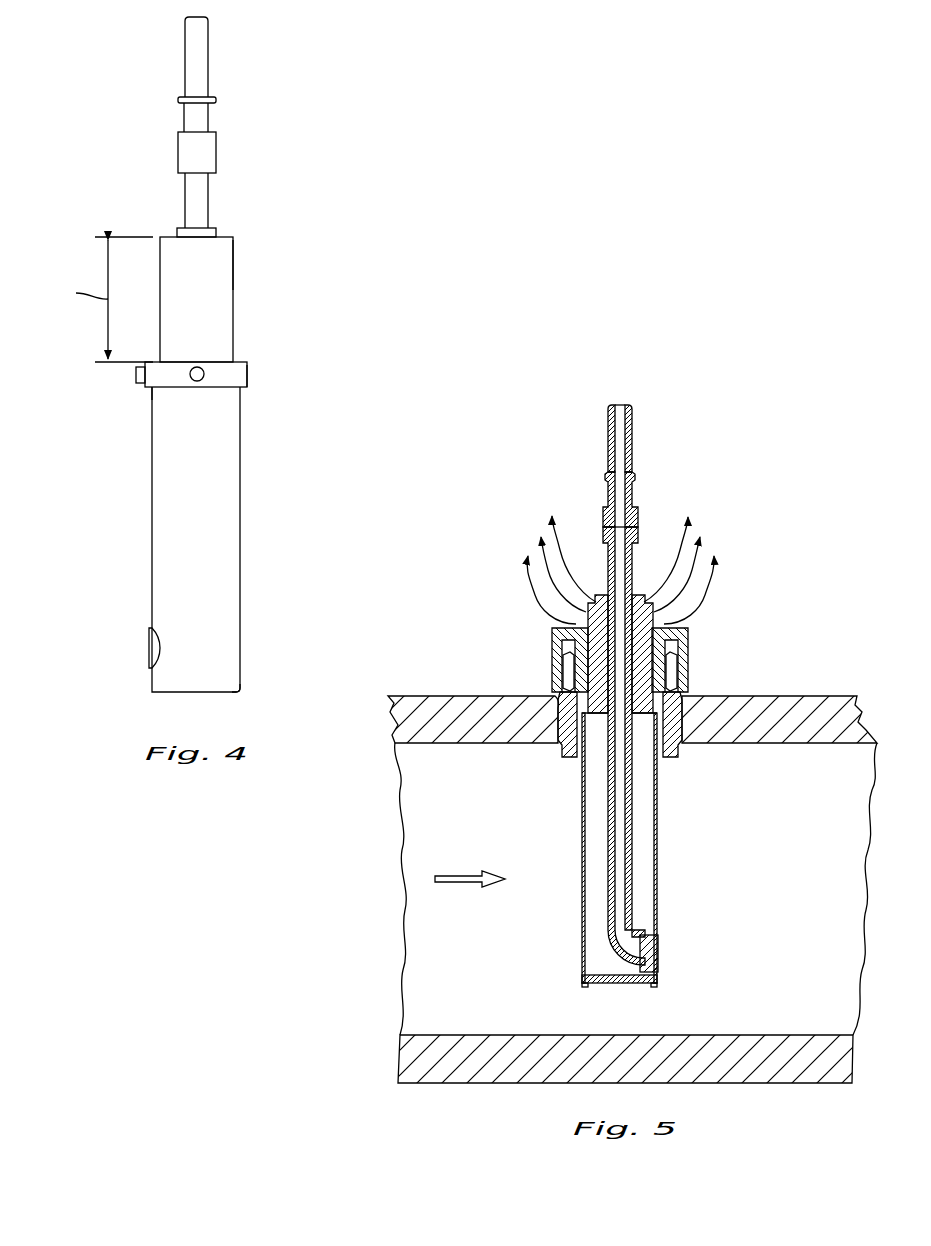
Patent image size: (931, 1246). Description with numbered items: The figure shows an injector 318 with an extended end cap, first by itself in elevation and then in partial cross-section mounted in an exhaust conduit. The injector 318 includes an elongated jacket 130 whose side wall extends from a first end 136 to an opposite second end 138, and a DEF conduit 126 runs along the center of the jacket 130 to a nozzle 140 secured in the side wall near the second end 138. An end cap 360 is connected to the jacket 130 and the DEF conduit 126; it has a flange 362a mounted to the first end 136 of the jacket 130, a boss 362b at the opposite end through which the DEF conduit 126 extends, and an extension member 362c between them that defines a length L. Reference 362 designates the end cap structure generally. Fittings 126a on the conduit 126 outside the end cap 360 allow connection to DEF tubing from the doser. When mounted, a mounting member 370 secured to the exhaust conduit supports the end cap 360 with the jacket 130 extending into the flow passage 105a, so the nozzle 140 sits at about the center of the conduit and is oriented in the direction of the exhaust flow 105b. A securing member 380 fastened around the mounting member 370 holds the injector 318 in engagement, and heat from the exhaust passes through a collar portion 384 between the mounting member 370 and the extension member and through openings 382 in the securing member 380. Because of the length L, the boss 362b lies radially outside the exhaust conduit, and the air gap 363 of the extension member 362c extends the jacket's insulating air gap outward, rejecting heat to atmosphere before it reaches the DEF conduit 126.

In FIG. 5, the flow passage 105a is at (777, 919).
In FIG. 5, the exhaust flow 105b is at (457, 870).
In FIG. 4, the DEF conduit 126 is at (201, 192).
In FIG. 5, the DEF conduit 126 is at (634, 553).
In FIG. 5, the fitting 126a is at (633, 442).
In FIG. 4, the jacket 130 is at (243, 517).
In FIG. 5, the jacket 130 is at (578, 975).
In FIG. 4, the first end 136 is at (153, 390).
In FIG. 4, the second end 138 is at (240, 690).
In FIG. 4, the nozzle 140 is at (148, 660).
In FIG. 4, the injector 318 is at (383, 151).
In FIG. 4, the end cap 360 is at (240, 301).
In FIG. 5, the end cap 360 is at (663, 598).
In FIG. 4, the collar 362 is at (247, 362).
In FIG. 4, the flange 362a is at (247, 378).
In FIG. 4, the boss 362b is at (216, 233).
In FIG. 4, the extension member 362c is at (233, 263).
In FIG. 5, the air gap 363 is at (680, 655).
In FIG. 5, the mounting member 370 is at (683, 697).
In FIG. 5, the securing member 380 is at (690, 642).
In FIG. 5, the openings 382 is at (578, 628).
In FIG. 5, the collar portion 384 is at (574, 668).